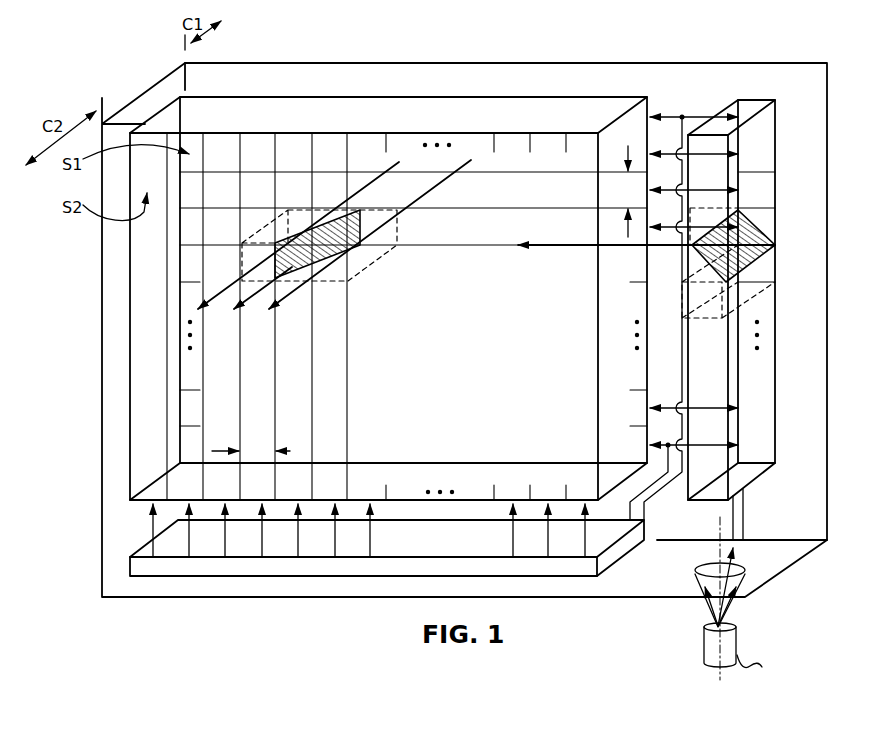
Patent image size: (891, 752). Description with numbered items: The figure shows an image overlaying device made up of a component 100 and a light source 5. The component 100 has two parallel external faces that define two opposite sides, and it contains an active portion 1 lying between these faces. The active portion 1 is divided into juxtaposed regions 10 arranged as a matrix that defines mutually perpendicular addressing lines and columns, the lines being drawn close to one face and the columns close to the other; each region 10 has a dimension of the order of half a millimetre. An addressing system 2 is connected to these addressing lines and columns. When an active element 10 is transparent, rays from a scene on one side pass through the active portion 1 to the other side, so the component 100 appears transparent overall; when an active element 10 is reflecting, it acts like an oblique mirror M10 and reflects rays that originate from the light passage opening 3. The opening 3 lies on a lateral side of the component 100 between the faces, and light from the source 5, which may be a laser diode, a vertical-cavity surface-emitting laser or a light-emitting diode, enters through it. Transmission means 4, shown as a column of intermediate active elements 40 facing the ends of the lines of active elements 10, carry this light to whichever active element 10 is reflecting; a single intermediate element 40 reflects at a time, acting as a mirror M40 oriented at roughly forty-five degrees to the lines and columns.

The active portion 1 is at (623, 99).
The addressing system 2 is at (130, 566).
The light passage opening 3 is at (708, 564).
The transmission means 4 is at (777, 328).
The light source 5 is at (703, 645).
The active element 10 is at (361, 273).
The intermediate active element 40 is at (690, 209).
The component 100 is at (787, 64).
The mirror M10 is at (346, 212).
The mirror M40 is at (776, 232).